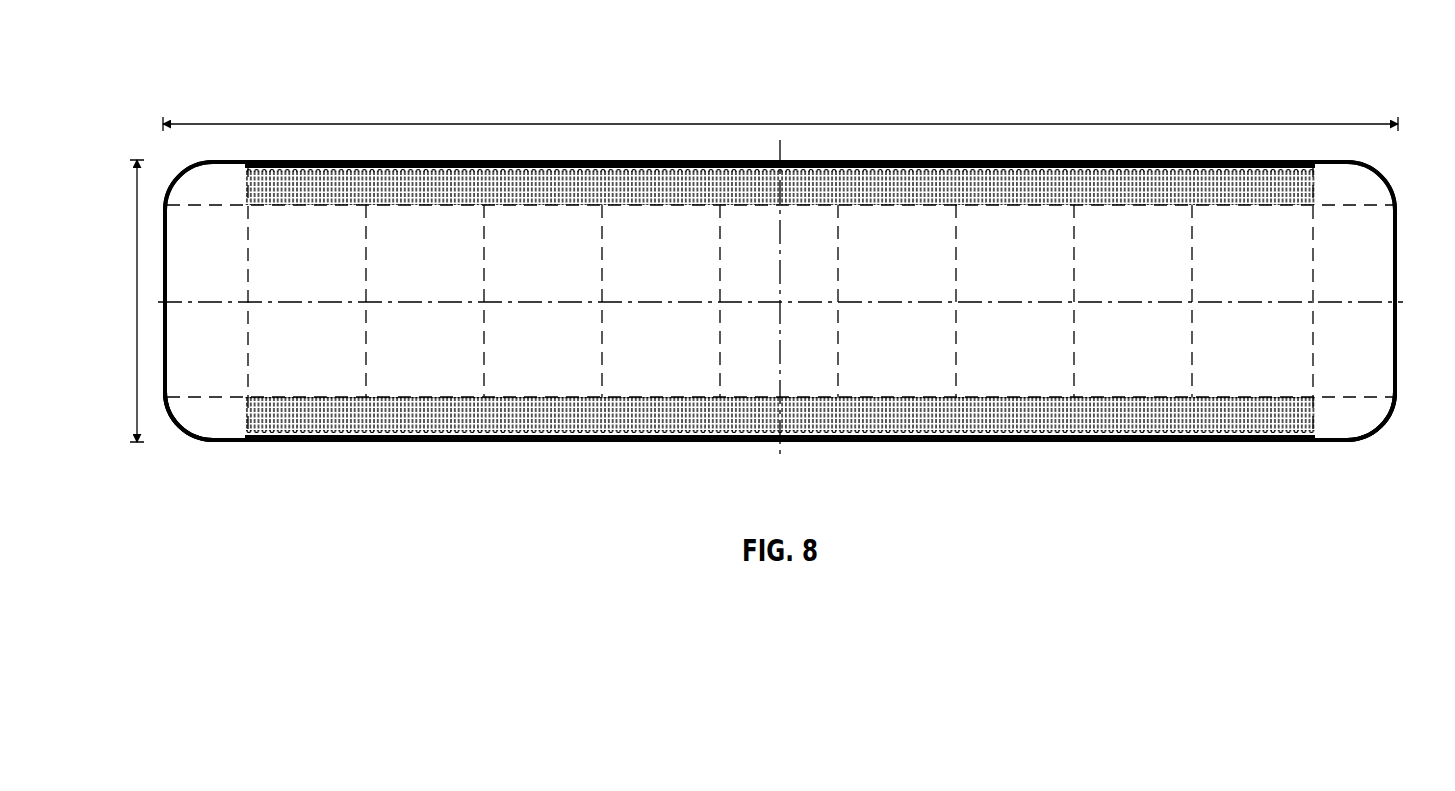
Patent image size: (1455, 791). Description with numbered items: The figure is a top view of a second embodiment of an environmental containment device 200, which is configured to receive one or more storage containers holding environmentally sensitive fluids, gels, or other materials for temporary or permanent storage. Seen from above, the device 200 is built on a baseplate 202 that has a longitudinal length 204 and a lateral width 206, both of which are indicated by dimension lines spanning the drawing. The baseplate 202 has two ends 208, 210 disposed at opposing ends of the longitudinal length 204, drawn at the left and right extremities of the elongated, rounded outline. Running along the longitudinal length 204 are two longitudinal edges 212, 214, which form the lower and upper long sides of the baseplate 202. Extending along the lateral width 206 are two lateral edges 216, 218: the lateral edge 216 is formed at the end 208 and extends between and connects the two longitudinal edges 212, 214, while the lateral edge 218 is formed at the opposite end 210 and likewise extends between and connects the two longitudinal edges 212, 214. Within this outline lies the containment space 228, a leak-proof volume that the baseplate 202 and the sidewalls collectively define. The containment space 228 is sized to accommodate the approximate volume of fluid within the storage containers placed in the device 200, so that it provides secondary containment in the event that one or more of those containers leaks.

The environmental containment device 200 is at (200, 68).
The baseplate 202 is at (1020, 398).
The longitudinal length 204 is at (781, 123).
The lateral width 206 is at (136, 301).
The end 208 is at (162, 466).
The end 210 is at (1342, 466).
The longitudinal edge 212 is at (580, 446).
The longitudinal edge 214 is at (508, 166).
The lateral edge 216 is at (182, 436).
The lateral edge 218 is at (1378, 436).
The containment space 228 is at (710, 340).